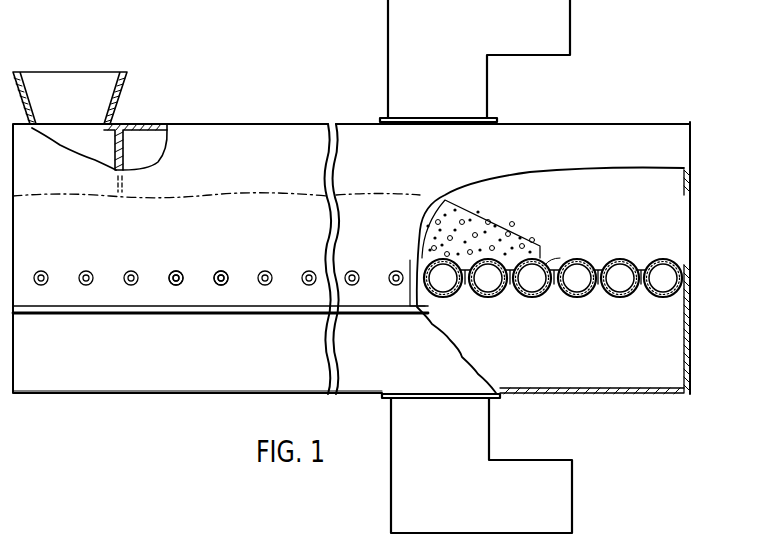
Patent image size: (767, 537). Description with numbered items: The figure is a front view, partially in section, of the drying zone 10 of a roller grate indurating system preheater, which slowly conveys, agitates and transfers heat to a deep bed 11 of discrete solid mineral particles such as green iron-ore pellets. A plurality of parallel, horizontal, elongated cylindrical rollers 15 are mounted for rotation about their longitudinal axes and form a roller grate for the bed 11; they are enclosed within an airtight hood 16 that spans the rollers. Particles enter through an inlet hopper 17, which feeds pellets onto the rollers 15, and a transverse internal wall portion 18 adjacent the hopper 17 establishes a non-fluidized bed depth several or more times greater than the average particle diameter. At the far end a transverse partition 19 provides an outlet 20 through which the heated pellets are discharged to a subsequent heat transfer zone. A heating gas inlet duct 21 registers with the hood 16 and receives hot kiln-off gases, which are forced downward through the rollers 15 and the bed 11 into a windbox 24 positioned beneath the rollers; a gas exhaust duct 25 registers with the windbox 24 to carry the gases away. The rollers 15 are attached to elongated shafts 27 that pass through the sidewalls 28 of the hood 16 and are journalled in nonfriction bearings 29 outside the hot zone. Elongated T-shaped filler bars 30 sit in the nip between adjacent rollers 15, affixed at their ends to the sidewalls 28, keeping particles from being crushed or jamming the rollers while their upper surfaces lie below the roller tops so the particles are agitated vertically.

The drying zone 10 is at (326, 112).
The bed 11 is at (500, 220).
The rollers 15 is at (306, 257).
The hood 16 is at (252, 146).
The inlet hopper 17 is at (123, 84).
The transverse internal wall portion 18 is at (124, 149).
The transverse partition 19 is at (690, 170).
The outlet 20 is at (690, 195).
The heating gas inlet duct 21 is at (545, 25).
The windbox 24 is at (60, 375).
The gas exhaust duct 25 is at (541, 470).
The shafts 27 is at (221, 276).
The sidewalls 28 is at (191, 134).
The nonfriction bearings 29 is at (221, 285).
The filler bars 30 is at (556, 258).